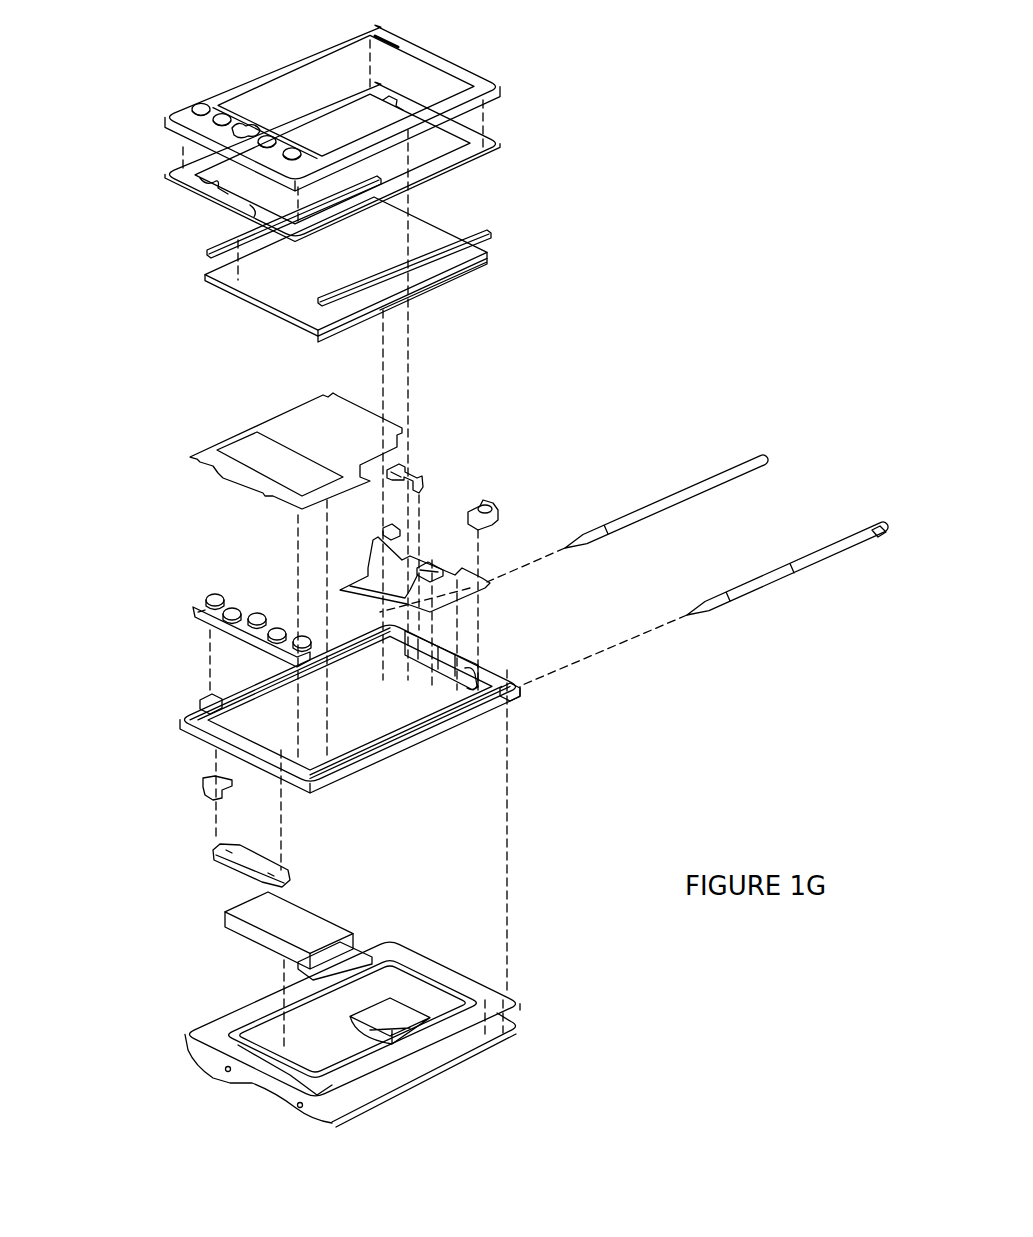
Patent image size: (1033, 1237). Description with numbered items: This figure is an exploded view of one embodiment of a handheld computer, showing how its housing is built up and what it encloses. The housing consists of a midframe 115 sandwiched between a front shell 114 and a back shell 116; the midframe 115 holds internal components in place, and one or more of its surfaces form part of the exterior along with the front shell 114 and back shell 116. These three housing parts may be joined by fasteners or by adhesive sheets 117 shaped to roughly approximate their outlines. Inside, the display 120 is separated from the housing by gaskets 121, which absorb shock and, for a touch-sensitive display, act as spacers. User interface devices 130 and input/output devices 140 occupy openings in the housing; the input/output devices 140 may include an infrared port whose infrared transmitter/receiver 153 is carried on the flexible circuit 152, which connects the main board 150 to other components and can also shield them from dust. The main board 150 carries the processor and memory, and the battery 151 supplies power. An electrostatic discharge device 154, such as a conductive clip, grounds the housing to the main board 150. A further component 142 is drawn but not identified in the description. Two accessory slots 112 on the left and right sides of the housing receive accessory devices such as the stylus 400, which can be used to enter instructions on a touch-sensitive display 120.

The accessory slot 112 is at (205, 697).
The front shell 114 is at (195, 128).
The midframe 115 is at (190, 712).
The back shell 116 is at (193, 1053).
The adhesive sheet 117 is at (183, 183).
The display 120 is at (297, 272).
The gasket 121 is at (210, 252).
The user interface devices 130 is at (403, 468).
The input/output devices 140 is at (455, 658).
The cover plate 142 is at (213, 848).
The main board 150 is at (200, 455).
The battery 151 is at (277, 922).
The flexible circuit 152 is at (487, 582).
The infrared transmitter/receiver 153 is at (438, 553).
The electrostatic discharge device 154 is at (203, 782).
The stylus 400 is at (757, 460).